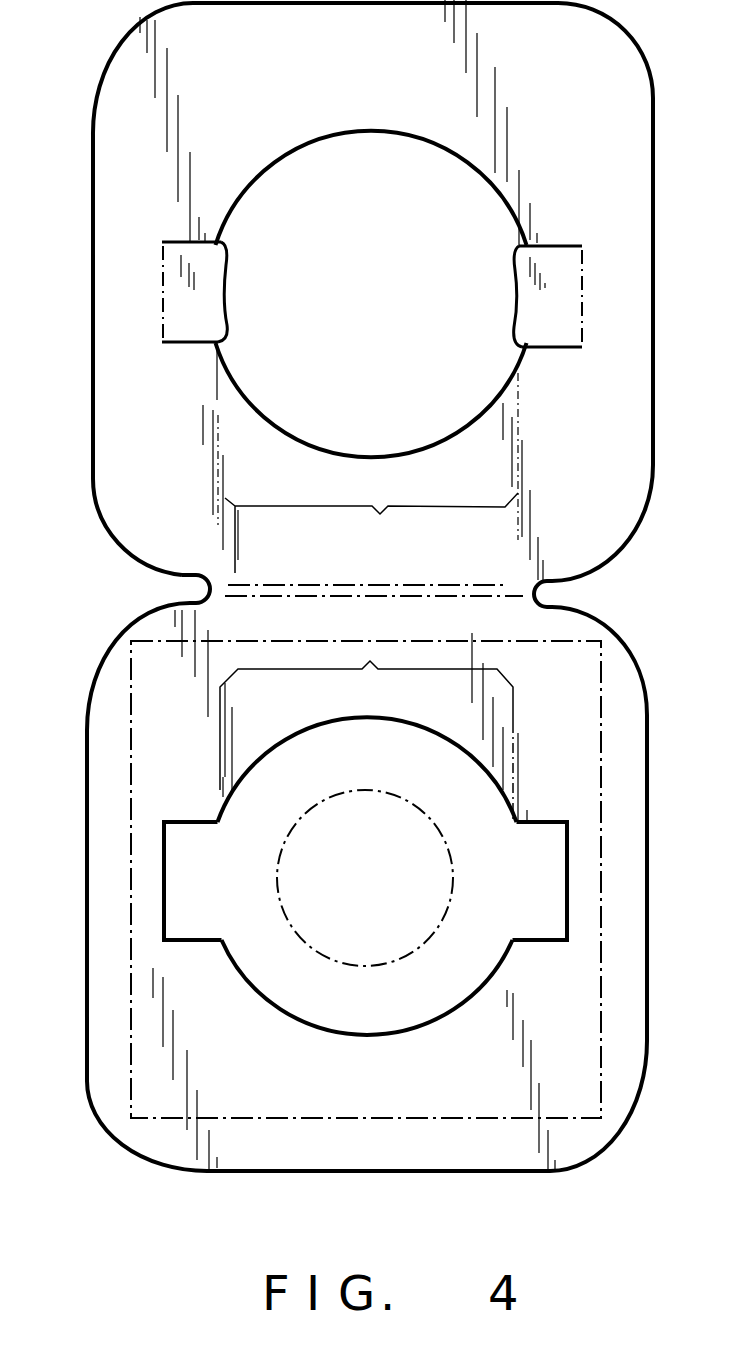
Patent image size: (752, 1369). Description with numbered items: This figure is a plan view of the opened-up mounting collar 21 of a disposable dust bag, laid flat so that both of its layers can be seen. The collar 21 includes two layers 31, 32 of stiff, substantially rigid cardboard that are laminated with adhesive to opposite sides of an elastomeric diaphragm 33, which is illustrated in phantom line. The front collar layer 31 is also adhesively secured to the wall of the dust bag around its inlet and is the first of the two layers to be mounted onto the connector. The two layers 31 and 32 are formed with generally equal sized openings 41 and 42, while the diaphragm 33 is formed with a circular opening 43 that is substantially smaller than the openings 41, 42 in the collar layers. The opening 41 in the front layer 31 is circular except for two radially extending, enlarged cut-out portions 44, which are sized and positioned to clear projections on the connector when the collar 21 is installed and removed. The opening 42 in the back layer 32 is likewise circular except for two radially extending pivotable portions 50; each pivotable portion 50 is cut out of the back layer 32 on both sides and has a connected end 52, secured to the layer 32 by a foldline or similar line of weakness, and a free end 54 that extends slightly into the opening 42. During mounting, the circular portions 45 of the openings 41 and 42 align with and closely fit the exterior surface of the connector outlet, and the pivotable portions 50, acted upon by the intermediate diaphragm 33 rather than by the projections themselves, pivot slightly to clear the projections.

The mounting collar 21 is at (178, 577).
The front collar layer 31 is at (107, 1017).
The back collar layer 32 is at (103, 103).
The elastomeric diaphragm 33 is at (255, 1093).
The opening in front collar layer 41 is at (398, 722).
The opening in back collar layer 42 is at (385, 260).
The circular opening of diaphragm 43 is at (345, 882).
The enlarged cut-out portions 44 is at (223, 812).
The circular portions 45 is at (371, 657).
The pivotable portion 50 is at (193, 345).
The connected end 52 is at (163, 306).
The free end 54 is at (229, 315).